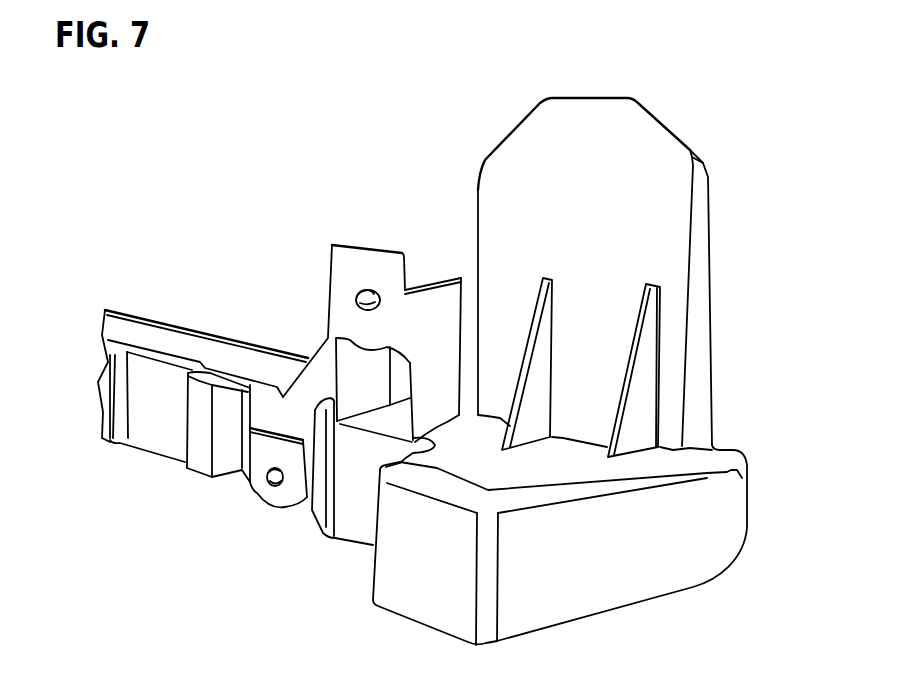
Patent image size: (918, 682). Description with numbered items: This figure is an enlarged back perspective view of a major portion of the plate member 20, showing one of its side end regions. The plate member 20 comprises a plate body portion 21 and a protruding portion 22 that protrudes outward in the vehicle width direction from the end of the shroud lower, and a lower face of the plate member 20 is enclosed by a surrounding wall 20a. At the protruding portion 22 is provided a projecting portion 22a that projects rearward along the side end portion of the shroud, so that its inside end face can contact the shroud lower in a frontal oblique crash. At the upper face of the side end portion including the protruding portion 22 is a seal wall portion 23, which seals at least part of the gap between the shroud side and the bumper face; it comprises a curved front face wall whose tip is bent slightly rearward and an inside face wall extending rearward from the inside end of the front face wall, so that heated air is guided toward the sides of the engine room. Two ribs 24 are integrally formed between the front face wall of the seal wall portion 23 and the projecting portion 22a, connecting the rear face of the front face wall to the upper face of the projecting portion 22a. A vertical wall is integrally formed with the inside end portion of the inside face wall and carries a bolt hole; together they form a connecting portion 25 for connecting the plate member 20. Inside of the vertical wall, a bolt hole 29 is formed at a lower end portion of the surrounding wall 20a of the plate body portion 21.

The plate member 20 is at (735, 177).
The surrounding wall 20a is at (158, 427).
The plate body portion 21 is at (138, 323).
The protruding portion 22 is at (718, 447).
The projecting portion 22a is at (447, 465).
The seal wall portion 23 is at (438, 300).
The rib 24 is at (523, 430).
The connecting portion 25 is at (357, 292).
The bolt hole 29 is at (270, 483).